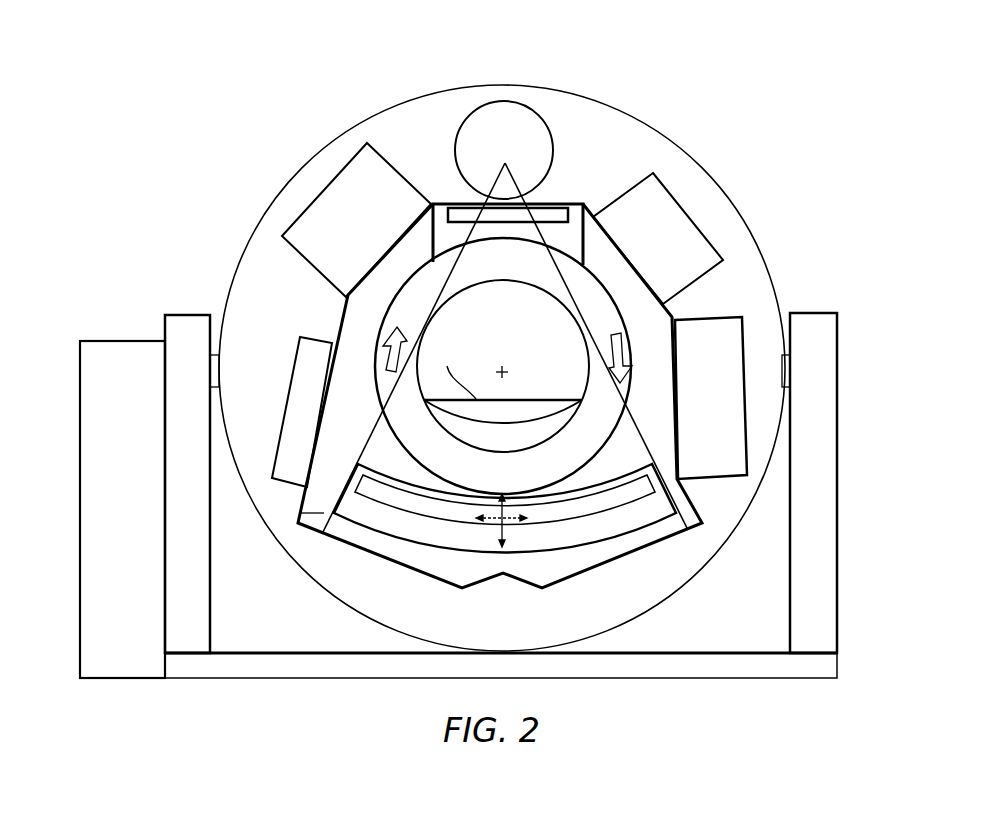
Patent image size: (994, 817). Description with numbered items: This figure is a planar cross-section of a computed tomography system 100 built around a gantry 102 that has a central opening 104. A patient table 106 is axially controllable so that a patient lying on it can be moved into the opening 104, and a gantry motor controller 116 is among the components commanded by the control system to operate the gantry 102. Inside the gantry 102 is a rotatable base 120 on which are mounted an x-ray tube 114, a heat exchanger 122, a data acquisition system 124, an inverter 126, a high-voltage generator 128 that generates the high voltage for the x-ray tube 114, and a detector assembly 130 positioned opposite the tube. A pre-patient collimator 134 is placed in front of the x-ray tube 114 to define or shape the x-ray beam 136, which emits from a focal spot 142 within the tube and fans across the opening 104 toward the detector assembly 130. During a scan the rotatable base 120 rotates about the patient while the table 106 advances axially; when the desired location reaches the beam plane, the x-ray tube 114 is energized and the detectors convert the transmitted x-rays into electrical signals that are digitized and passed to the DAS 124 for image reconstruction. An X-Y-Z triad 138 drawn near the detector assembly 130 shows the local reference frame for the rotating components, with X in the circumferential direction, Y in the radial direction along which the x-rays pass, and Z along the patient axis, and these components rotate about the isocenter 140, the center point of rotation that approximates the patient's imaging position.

The computed tomography (CT) system 100 is at (706, 96).
The gantry 102 is at (249, 243).
The opening 104 is at (548, 339).
The patient table 106 is at (450, 424).
The x-ray tube 114 is at (505, 101).
The gantry motor controller 116 is at (98, 341).
The rotatable base 120 is at (300, 513).
The heat exchanger 122 is at (302, 213).
The data acquisition system (DAS) 124 is at (292, 372).
The inverter 126 is at (686, 213).
The high-voltage generator 128 is at (725, 317).
The detector assembly 130 is at (623, 520).
The pre-patient collimator 134 is at (444, 218).
The x-ray beam 136 is at (637, 443).
The X-Y-Z triad 138 is at (480, 537).
The isocenter 140 is at (500, 364).
The focal spot 142 is at (505, 163).